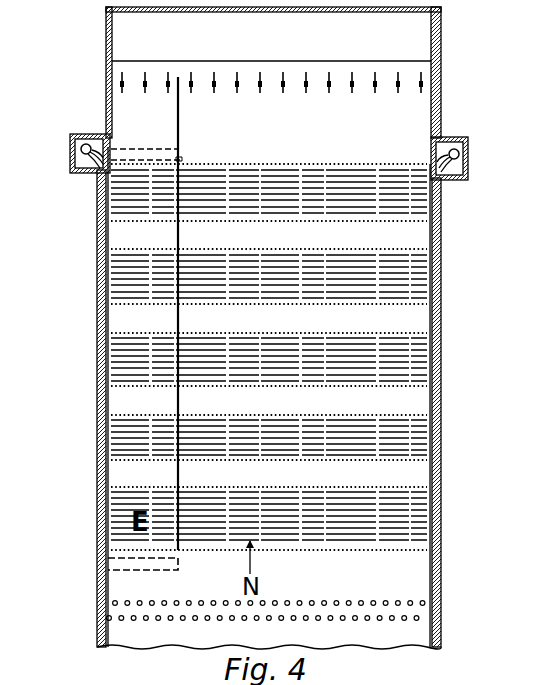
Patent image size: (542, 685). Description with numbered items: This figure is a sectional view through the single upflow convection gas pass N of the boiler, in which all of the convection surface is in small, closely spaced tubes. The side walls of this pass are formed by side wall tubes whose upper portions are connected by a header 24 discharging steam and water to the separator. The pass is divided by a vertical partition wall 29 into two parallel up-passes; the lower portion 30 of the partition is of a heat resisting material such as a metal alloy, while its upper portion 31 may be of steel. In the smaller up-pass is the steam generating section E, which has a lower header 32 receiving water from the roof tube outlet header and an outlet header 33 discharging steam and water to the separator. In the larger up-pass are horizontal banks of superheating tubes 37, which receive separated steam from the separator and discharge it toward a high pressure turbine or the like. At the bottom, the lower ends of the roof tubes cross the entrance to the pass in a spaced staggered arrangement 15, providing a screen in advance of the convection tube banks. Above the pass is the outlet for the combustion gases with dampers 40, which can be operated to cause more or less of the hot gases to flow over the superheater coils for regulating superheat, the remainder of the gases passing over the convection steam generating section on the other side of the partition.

The spaced staggered arrangement of roof tube lower ends 15 is at (302, 616).
The header 24 is at (78, 149).
The vertical partition wall 29 is at (183, 158).
The lower portion of partition wall 30 is at (180, 483).
The upper portion of partition wall 31 is at (180, 116).
The lower header 32 is at (147, 572).
The outlet header 33 is at (139, 149).
The horizontal banks of superheating tubes 37 is at (319, 388).
The dampers 40 is at (352, 93).